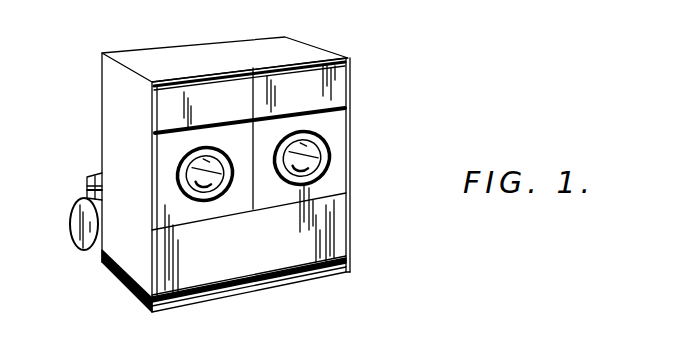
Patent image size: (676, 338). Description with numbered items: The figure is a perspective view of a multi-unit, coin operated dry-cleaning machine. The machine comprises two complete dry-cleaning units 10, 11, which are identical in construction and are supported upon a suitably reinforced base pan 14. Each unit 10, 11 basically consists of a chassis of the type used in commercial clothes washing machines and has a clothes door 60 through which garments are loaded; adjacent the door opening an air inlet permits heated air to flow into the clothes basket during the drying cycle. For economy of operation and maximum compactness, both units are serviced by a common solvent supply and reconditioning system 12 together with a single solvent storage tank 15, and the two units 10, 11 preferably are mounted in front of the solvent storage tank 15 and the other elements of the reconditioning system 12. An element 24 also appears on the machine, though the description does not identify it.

The dry-cleaning unit 10 is at (184, 203).
The dry-cleaning unit 11 is at (335, 180).
The solvent supply and reconditioning system 12 is at (62, 198).
The base pan 14 is at (330, 245).
The solvent storage tank 15 is at (71, 230).
The mounting bracket 24 is at (86, 180).
The clothes door 60 is at (223, 158).